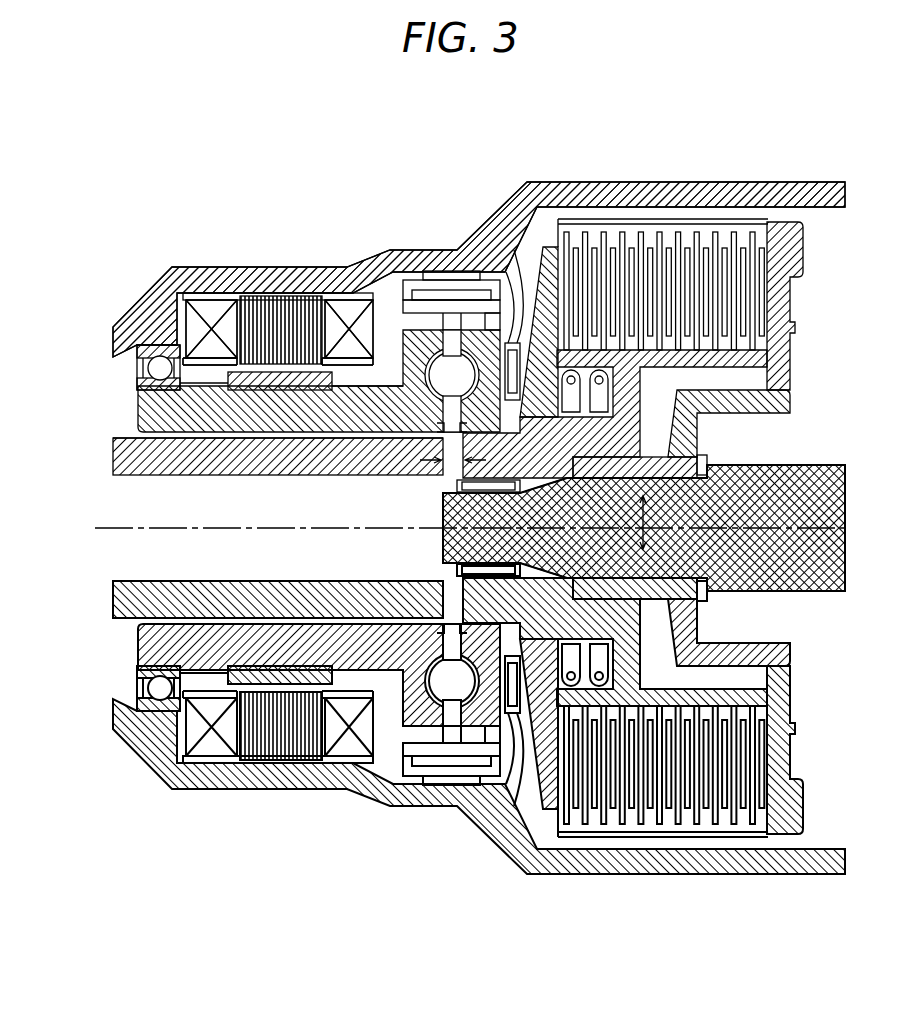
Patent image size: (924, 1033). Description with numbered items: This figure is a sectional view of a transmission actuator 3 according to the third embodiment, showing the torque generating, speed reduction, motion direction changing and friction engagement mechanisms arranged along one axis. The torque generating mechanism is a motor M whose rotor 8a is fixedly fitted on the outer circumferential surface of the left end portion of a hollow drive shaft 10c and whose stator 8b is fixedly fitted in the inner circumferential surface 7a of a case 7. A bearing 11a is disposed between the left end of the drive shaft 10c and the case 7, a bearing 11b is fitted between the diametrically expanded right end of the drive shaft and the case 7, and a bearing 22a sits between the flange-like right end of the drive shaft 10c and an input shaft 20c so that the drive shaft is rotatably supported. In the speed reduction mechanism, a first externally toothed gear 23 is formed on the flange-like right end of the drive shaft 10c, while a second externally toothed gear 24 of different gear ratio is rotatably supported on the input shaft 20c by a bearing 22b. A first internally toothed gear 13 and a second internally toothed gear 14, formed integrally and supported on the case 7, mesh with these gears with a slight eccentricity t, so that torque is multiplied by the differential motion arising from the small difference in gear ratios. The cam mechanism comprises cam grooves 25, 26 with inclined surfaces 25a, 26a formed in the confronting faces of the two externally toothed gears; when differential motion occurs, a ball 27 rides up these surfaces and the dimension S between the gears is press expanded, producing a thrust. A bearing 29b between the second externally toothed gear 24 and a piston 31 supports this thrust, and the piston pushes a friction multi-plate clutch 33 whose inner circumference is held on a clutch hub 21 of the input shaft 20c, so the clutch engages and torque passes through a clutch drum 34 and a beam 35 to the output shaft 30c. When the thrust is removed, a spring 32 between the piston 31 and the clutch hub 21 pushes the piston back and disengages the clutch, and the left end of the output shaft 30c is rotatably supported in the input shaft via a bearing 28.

The motor clutch unit 3 is at (216, 250).
The case 7 is at (348, 278).
The inner circumferential surface 7a is at (335, 296).
The rotor 8a is at (282, 305).
The stator 8b is at (258, 300).
The motor M is at (285, 197).
The first internally toothed gear 13 is at (403, 285).
The first externally toothed gear 23 is at (412, 292).
The ball 27 is at (425, 276).
The bearing 11b is at (452, 305).
The second externally toothed gear 24 is at (490, 312).
The second internally toothed gear 14 is at (506, 275).
The cam groove 25 is at (512, 395).
The inclined surface 25a is at (522, 252).
The bearing 29b is at (549, 275).
The hollow drive shaft 10c is at (138, 408).
The cam groove 26 is at (392, 432).
The inclined surface 26a is at (440, 400).
The piston 31 is at (585, 370).
The spring 32 is at (590, 327).
The friction multi-plate clutch 33 is at (717, 257).
The clutch hub 21 is at (634, 430).
The bearing 28 is at (602, 464).
The beam 35 is at (763, 413).
The clutch drum 34 is at (788, 355).
The output shaft 30c is at (820, 466).
The bearing 22b is at (447, 500).
The input shaft 20c is at (114, 450).
The bearing 22a is at (313, 456).
The bearing 11a is at (146, 368).
The dimension S is at (453, 460).
The eccentricity t is at (648, 522).